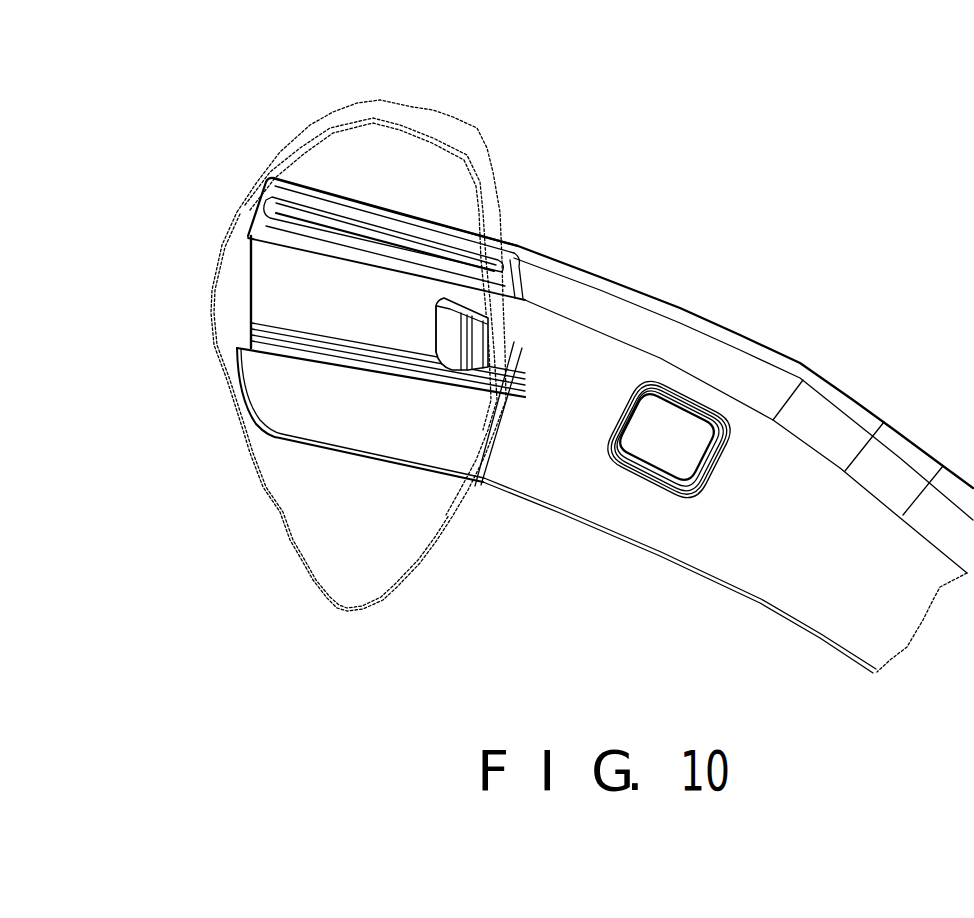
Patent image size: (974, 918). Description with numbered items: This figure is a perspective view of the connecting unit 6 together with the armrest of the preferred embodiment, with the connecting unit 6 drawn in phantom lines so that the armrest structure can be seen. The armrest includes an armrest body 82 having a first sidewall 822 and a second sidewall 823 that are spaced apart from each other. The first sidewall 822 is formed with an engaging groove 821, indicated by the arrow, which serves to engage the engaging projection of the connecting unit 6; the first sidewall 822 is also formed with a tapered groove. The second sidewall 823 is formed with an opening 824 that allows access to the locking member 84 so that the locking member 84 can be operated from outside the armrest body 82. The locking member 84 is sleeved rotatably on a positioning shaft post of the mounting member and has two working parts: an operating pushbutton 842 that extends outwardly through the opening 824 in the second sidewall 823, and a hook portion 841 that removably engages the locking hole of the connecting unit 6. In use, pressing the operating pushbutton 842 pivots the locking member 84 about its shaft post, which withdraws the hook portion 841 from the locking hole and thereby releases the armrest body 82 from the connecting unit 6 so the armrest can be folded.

The connecting unit 6 is at (446, 122).
The armrest body 82 is at (800, 357).
The engaging groove 821 is at (373, 303).
The first sidewall 822 is at (435, 221).
The second sidewall 823 is at (805, 497).
The opening 824 is at (650, 380).
The locking member 84 is at (505, 341).
The hook portion 841 is at (448, 340).
The operating pushbutton 842 is at (675, 440).